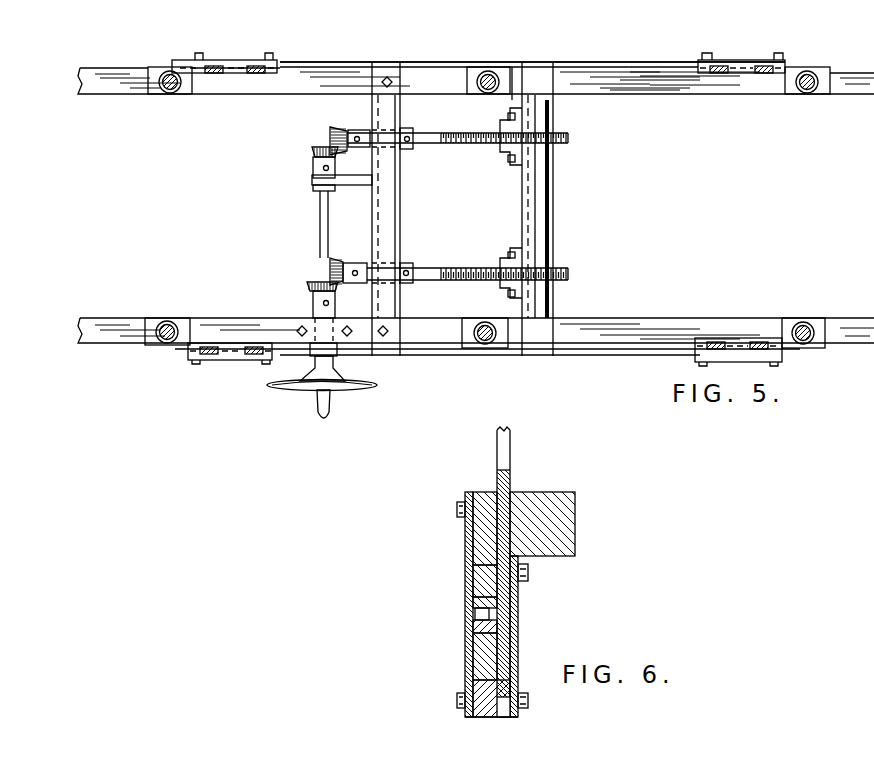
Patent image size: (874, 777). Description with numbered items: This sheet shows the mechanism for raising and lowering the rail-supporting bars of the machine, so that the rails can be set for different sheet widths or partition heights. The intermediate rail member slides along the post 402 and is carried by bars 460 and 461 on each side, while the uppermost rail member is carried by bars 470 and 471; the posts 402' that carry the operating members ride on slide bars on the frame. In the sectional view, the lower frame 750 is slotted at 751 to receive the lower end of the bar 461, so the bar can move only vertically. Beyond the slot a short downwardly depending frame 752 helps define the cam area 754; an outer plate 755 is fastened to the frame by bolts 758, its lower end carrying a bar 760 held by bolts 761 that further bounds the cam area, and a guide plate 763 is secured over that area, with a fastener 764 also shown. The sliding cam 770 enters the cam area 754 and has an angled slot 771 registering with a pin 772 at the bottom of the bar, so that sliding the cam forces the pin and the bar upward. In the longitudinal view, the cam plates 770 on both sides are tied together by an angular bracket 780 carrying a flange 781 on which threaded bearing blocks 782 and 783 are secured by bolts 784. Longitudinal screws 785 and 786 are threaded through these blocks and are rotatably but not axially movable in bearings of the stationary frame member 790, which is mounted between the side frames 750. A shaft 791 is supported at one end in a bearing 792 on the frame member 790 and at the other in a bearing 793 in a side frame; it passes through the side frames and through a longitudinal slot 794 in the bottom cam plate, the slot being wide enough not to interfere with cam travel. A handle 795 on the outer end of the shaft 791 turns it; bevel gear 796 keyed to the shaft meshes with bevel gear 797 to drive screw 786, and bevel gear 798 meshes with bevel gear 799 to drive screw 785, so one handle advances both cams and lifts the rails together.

In FIG. 5, the post 402 is at (505, 63).
In FIG. 5, the post 402' is at (483, 333).
In FIG. 5, the bar 460 is at (210, 65).
In FIG. 5, the bar 461 is at (718, 65).
In FIG. 5, the bar 470 is at (258, 65).
In FIG. 5, the bar 471 is at (765, 65).
In FIG. 5, the lower frame 750 is at (664, 95).
In FIG. 6, the lower frame 750 is at (566, 500).
In FIG. 6, the slot 751 is at (506, 501).
In FIG. 6, the downwardly depending frame 752 is at (483, 547).
In FIG. 6, the cam area 754 is at (476, 582).
In FIG. 6, the outer plate 755 is at (468, 527).
In FIG. 6, the bolt 758 is at (458, 506).
In FIG. 6, the bar 760 is at (492, 707).
In FIG. 6, the bolt 761 is at (458, 699).
In FIG. 6, the guide plate 763 is at (516, 626).
In FIG. 6, the nut 764 is at (528, 577).
In FIG. 5, the sliding cam 770 is at (625, 62).
In FIG. 6, the sliding cam 770 is at (483, 598).
In FIG. 6, the slot 771 is at (481, 610).
In FIG. 6, the pin 772 is at (481, 627).
In FIG. 5, the angular bracket 780 is at (554, 221).
In FIG. 5, the flange 781 is at (523, 221).
In FIG. 5, the threaded bearing block 782 is at (514, 121).
In FIG. 5, the threaded bearing block 783 is at (516, 295).
In FIG. 5, the bolt 784 is at (509, 116).
In FIG. 5, the longitudinal screw 785 is at (434, 145).
In FIG. 5, the longitudinal screw 786 is at (469, 268).
In FIG. 5, the frame member 790 is at (393, 114).
In FIG. 5, the shaft 791 is at (320, 201).
In FIG. 5, the bearing 792 is at (312, 180).
In FIG. 5, the bearing 793 is at (312, 322).
In FIG. 5, the longitudinal slot 794 is at (297, 351).
In FIG. 5, the handle 795 is at (308, 391).
In FIG. 5, the bevel gear 796 is at (319, 282).
In FIG. 5, the bevel gear 797 is at (334, 262).
In FIG. 5, the bevel gear 798 is at (318, 147).
In FIG. 5, the bevel gear 799 is at (339, 128).